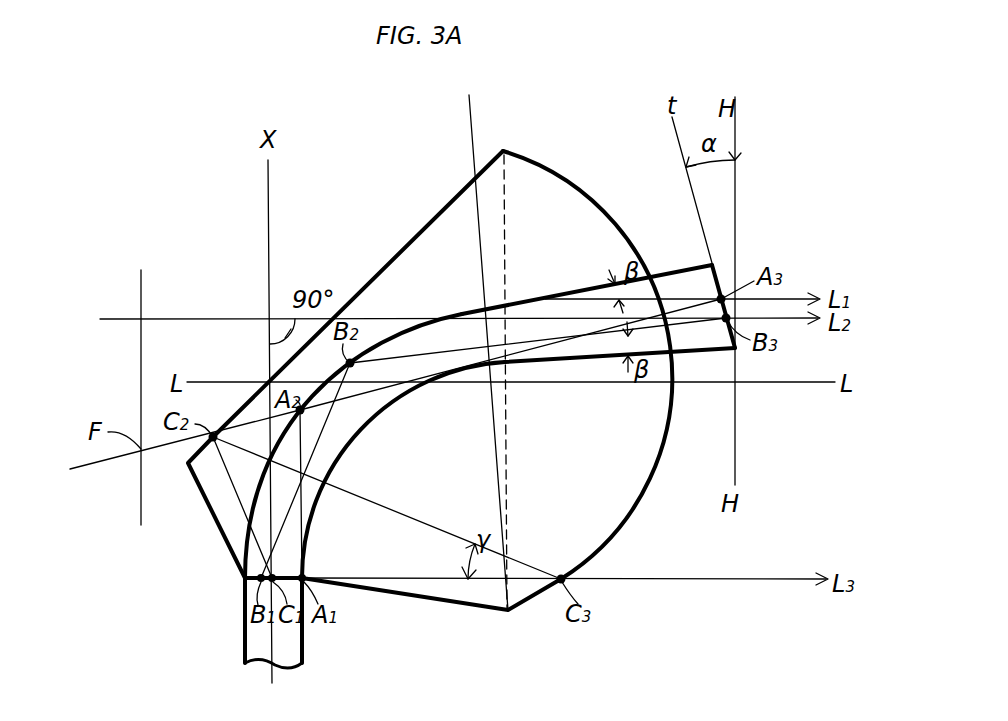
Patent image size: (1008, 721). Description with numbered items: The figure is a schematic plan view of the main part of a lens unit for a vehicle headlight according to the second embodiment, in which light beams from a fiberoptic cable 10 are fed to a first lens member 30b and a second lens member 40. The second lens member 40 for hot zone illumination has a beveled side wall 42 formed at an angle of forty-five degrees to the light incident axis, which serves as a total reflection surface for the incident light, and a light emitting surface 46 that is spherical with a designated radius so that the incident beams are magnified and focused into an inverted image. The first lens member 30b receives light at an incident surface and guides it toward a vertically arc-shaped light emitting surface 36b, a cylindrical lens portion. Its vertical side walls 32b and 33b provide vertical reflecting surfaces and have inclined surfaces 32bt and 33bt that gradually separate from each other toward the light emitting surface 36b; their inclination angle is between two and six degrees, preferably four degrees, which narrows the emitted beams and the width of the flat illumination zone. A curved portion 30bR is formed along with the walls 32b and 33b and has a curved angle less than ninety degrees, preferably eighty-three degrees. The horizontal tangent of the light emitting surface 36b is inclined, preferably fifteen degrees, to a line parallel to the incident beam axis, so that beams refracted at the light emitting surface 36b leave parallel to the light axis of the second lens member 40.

The fiberoptic cable 10 is at (290, 655).
The second lens member 40 is at (398, 566).
The beveled side wall 42 is at (418, 233).
The light emitting surface 46 is at (650, 500).
The first lens member 30b is at (521, 397).
The vertical side wall 32b is at (407, 327).
The inclined surface 32bt is at (575, 291).
The vertical side wall 33b is at (433, 383).
The inclined surface 33bt is at (591, 360).
The curved portion 30bR is at (355, 418).
The light emitting surface 36b is at (716, 272).